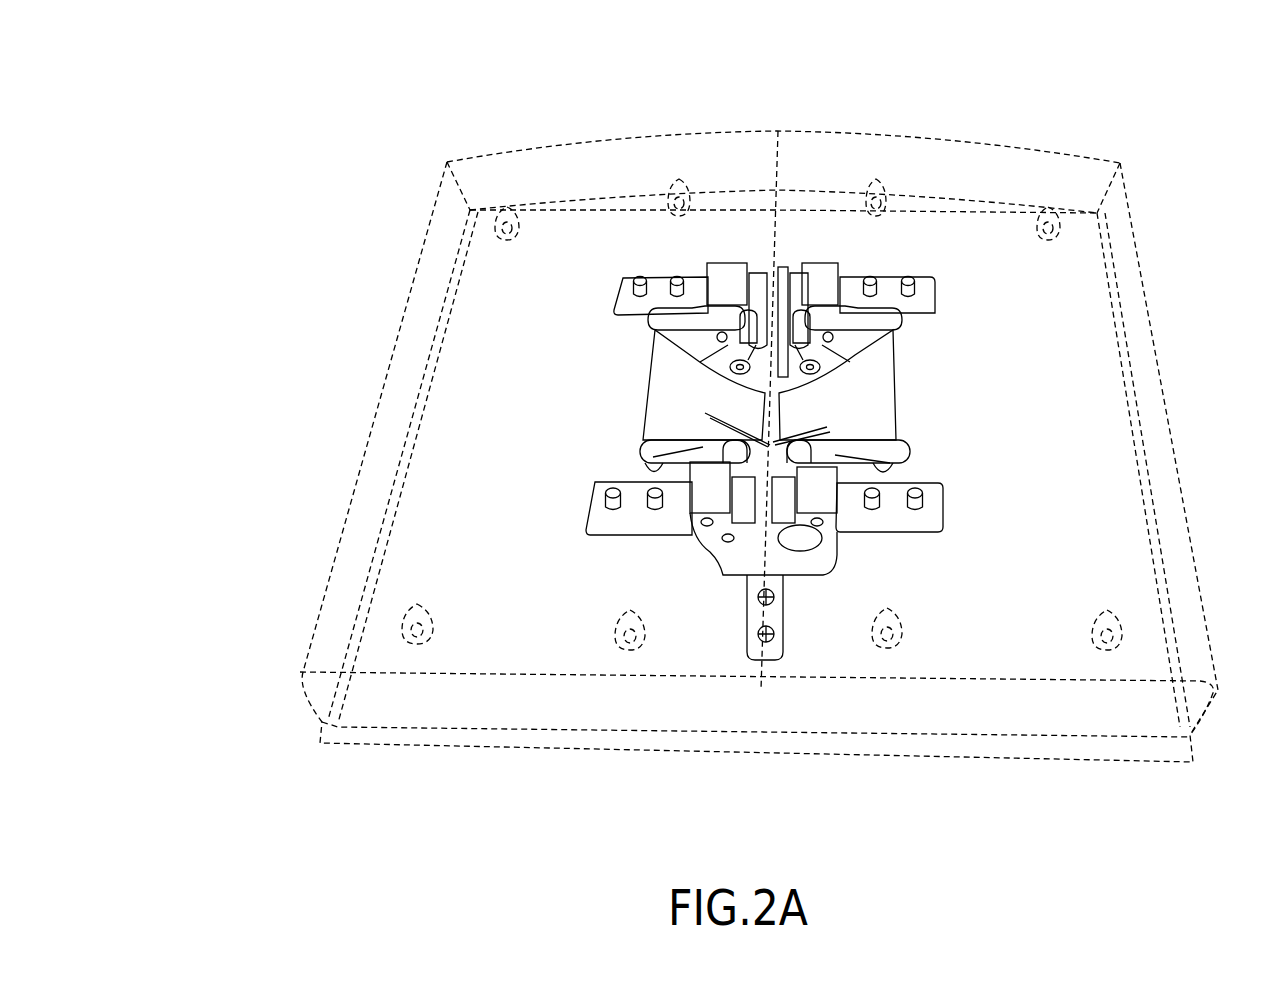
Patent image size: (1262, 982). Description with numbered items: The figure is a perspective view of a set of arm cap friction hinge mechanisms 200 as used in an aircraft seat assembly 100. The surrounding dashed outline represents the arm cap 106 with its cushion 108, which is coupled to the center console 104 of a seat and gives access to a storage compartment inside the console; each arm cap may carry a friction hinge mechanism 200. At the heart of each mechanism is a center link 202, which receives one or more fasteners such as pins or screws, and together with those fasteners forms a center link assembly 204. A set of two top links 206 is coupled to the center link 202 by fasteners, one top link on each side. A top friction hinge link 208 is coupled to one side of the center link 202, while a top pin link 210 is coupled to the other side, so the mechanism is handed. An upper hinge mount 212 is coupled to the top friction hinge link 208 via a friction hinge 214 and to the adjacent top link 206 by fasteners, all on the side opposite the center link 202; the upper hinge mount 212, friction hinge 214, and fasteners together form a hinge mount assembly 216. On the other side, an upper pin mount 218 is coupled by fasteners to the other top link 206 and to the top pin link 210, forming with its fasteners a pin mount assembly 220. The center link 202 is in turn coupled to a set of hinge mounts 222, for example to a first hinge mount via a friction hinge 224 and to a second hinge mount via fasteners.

The aircraft seat assembly 100 is at (282, 48).
The center console 104 is at (491, 748).
The arm cap 106 is at (432, 146).
The cushion 108 is at (1146, 296).
The friction hinge mechanism 200 is at (532, 275).
The center link 202 is at (660, 378).
The center link assembly 204 is at (614, 406).
The top links 206 is at (660, 322).
The top friction hinge link 208 is at (665, 350).
The top pin link 210 is at (680, 445).
The upper hinge mount 212 is at (626, 296).
The friction hinge 214 is at (752, 266).
The hinge mount assembly 216 is at (706, 250).
The upper pin mount 218 is at (925, 298).
The pin mount assembly 220 is at (868, 252).
The hinge mounts 222 is at (790, 270).
The friction hinge 224 is at (800, 566).